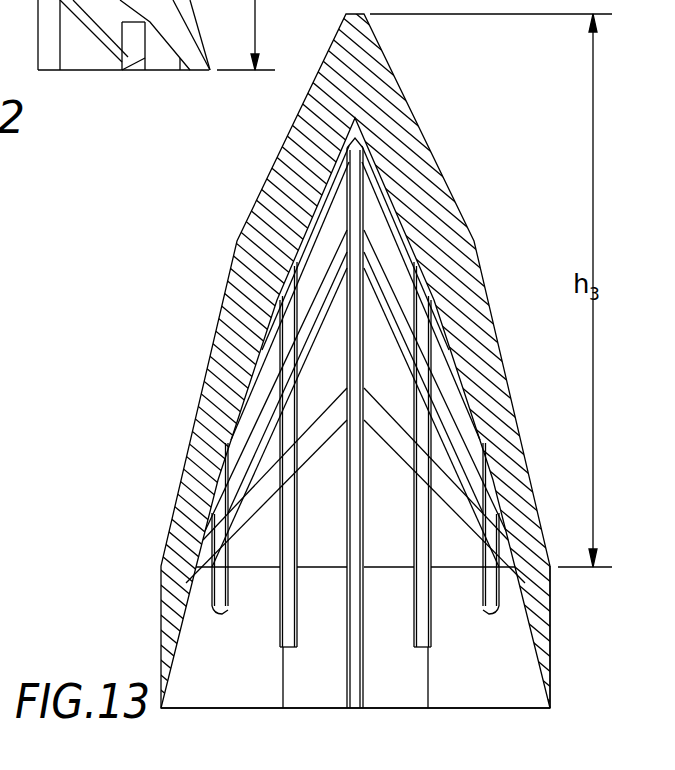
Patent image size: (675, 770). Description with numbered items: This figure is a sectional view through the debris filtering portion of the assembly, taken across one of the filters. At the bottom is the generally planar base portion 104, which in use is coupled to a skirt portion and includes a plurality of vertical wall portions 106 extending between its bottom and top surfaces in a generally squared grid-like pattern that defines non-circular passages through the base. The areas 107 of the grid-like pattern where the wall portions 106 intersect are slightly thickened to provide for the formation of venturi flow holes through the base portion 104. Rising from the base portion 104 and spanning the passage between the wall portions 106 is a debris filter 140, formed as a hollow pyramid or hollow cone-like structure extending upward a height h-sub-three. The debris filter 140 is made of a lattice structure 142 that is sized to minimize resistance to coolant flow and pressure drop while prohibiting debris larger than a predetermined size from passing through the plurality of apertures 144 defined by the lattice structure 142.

The base portion 104 is at (580, 651).
The vertical wall portions 106 is at (327, 671).
The areas of the grid-like pattern 107 is at (537, 676).
The debris filter 140 is at (482, 136).
The lattice structure 142 is at (483, 358).
The apertures 144 is at (395, 478).